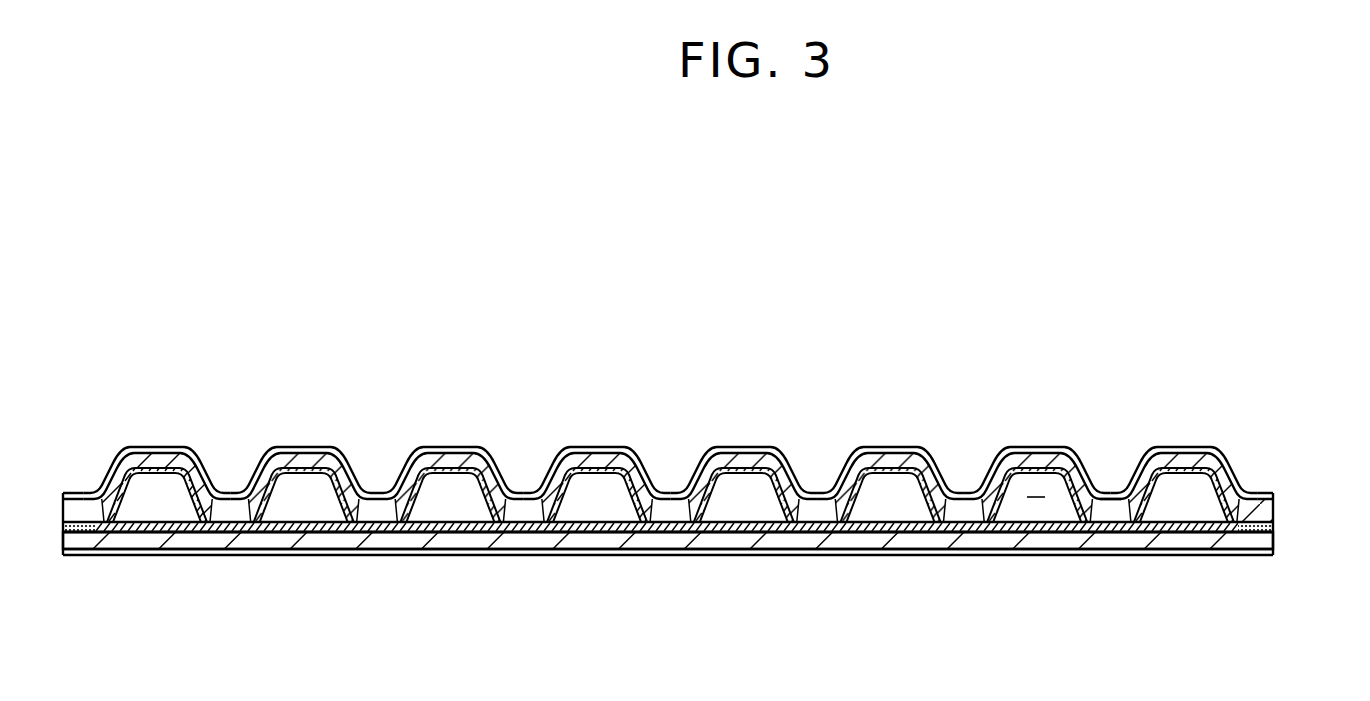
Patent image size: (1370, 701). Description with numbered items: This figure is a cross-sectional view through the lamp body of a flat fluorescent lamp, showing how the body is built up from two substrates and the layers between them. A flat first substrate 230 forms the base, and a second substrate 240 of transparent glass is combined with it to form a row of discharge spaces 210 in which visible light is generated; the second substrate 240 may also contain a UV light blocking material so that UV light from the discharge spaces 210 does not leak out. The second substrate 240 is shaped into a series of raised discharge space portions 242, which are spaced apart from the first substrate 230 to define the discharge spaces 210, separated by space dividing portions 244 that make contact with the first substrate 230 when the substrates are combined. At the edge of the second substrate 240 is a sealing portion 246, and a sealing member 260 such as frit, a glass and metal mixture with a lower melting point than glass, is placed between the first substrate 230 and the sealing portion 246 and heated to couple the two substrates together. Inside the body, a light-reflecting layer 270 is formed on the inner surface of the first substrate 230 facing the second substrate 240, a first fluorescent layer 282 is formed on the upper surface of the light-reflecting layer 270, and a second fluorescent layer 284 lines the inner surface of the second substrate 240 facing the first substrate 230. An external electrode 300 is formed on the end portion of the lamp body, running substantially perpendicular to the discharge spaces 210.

The discharge space 210 is at (1037, 496).
The first substrate 230 is at (1268, 543).
The second substrate 240 is at (1270, 507).
The discharge space portion 242 is at (1190, 460).
The space dividing portion 244 is at (1113, 505).
The sealing portion 246 is at (1254, 512).
The sealing member 260 is at (1272, 527).
The light-reflecting layer 270 is at (1033, 533).
The first fluorescent layer 282 is at (1143, 531).
The second fluorescent layer 284 is at (1193, 474).
The external electrode 300 is at (1268, 495).